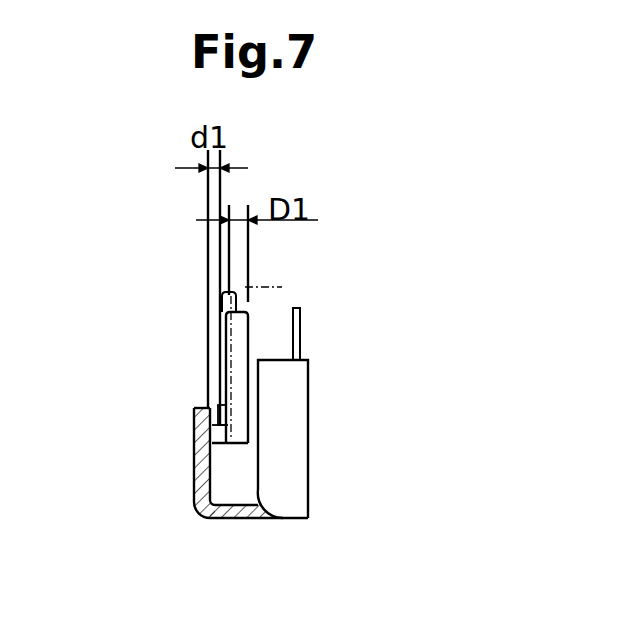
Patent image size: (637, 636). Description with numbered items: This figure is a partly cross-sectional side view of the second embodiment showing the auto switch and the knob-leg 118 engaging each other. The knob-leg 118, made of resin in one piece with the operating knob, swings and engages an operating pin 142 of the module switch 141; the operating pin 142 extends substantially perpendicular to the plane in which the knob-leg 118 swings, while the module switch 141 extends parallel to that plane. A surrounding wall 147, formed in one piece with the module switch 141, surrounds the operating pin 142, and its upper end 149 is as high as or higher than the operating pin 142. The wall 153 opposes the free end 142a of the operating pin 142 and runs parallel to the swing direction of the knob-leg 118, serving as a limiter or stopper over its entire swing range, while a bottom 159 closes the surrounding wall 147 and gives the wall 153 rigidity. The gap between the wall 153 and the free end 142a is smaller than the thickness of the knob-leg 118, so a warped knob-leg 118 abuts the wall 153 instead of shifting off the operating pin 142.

The knob-leg 118 is at (250, 347).
The module switch 141 is at (307, 460).
The operating pin 142 is at (250, 409).
The free end of the operating pin 142a is at (211, 405).
The surrounding wall 147 is at (195, 450).
The upper end of the surrounding wall 149 is at (200, 405).
The wall 153 is at (195, 482).
The bottom 159 is at (241, 518).